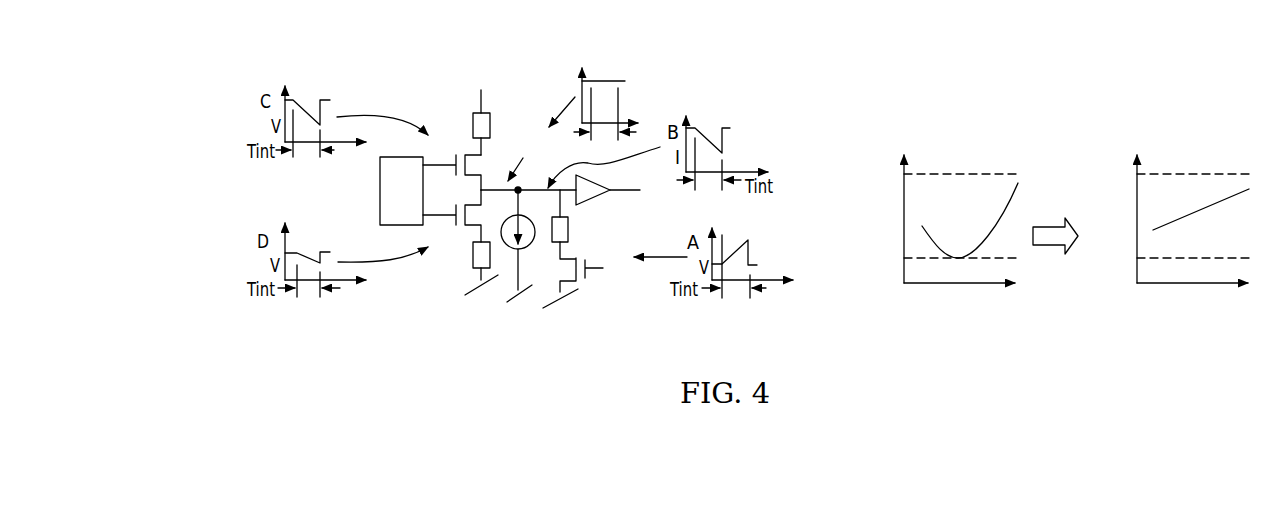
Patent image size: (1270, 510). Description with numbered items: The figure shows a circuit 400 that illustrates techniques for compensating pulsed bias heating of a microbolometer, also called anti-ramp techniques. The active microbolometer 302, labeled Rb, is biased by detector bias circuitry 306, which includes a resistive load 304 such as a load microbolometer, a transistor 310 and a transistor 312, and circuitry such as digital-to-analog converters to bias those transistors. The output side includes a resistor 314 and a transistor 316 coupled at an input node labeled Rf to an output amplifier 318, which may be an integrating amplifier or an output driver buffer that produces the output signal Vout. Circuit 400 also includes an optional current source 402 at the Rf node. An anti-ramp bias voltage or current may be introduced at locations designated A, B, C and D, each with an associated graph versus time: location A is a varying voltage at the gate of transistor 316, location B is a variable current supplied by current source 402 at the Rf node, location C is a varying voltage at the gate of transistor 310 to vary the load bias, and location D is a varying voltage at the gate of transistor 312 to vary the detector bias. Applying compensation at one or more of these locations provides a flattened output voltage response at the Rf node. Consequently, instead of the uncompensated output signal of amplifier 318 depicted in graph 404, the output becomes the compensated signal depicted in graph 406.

The microbolometer 302 is at (470, 268).
The resistive load 304 is at (492, 123).
The detector bias circuitry 306 is at (370, 186).
The transistor 310 is at (464, 152).
The transistor 312 is at (470, 205).
The resistor 314 is at (570, 228).
The transistor 316 is at (576, 283).
The output amplifier 318 is at (596, 200).
The circuit 400 is at (565, 347).
The current source 402 is at (536, 246).
The graph 404 is at (886, 275).
The graph 406 is at (1119, 275).